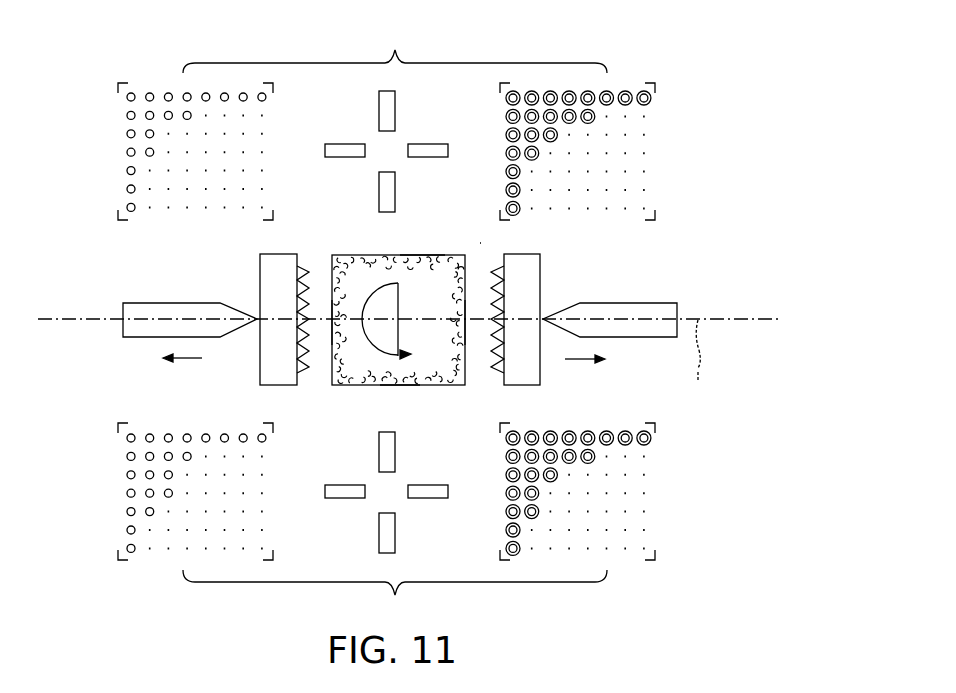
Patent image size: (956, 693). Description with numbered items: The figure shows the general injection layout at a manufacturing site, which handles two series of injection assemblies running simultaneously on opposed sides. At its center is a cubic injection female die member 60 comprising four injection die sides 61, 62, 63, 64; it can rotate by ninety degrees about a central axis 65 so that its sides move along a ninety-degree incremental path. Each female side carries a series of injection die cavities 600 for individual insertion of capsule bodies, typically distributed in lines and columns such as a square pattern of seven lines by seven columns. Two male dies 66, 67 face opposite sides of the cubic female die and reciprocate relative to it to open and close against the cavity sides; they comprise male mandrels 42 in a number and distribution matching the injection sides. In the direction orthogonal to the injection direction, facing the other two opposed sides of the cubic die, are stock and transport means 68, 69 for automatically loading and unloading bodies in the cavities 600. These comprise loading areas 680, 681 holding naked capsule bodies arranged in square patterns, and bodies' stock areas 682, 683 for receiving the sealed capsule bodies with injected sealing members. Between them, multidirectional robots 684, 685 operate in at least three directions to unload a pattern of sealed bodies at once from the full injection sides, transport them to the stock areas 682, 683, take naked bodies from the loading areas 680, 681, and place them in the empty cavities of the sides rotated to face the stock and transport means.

The cubic injection female die member 60 is at (488, 243).
The injection die side 61 is at (330, 360).
The injection die side 62 is at (418, 387).
The injection die side 63 is at (466, 357).
The injection die side 64 is at (447, 254).
The central axis 65 is at (406, 318).
The male die 66 is at (188, 302).
The male die 67 is at (622, 302).
The stock and transport means 68 is at (395, 597).
The stock and transport means 69 is at (395, 50).
The male mandrel 42 is at (302, 271).
The injection die cavity 600 is at (345, 261).
The loading area 680 is at (104, 496).
The loading area 681 is at (104, 168).
The bodies' stock area 682 is at (680, 119).
The bodies' stock area 683 is at (680, 457).
The multidirectional robot 684 is at (418, 519).
The multidirectional robot 685 is at (417, 133).